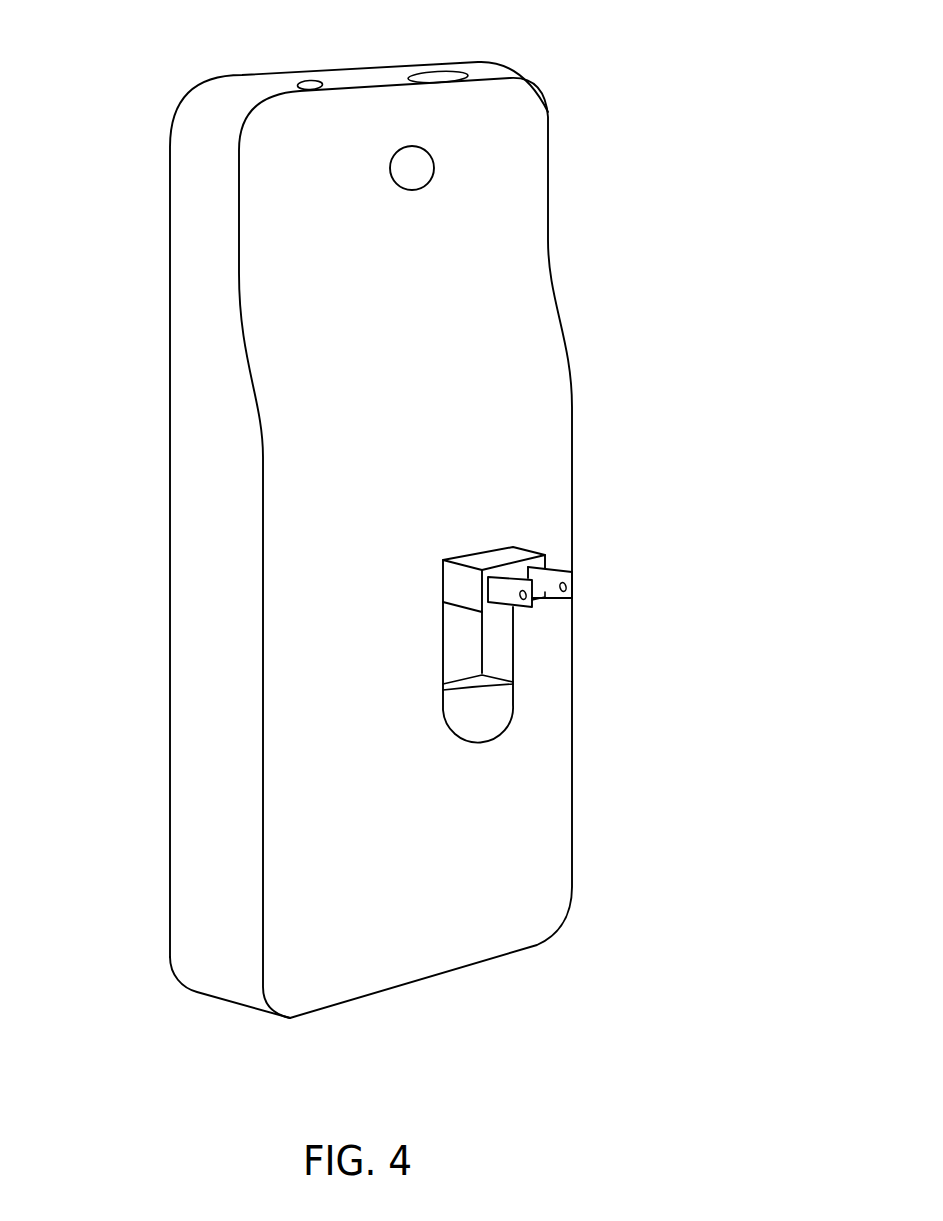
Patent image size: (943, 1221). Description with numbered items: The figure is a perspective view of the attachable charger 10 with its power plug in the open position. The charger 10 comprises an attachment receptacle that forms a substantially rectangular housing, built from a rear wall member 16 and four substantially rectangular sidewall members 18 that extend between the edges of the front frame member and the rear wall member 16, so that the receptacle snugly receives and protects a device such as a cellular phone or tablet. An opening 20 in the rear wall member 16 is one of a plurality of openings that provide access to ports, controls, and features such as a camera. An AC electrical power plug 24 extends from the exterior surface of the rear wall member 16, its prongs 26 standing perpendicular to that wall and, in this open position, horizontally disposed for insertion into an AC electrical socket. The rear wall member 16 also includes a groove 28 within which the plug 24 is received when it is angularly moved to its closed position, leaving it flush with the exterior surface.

The charger 10 is at (414, 509).
The rear wall member 16 is at (505, 385).
The sidewall members 18 is at (205, 463).
The openings 20 is at (417, 167).
The AC electrical power plug 24 is at (457, 585).
The prongs 26 is at (548, 582).
The groove 28 is at (463, 648).